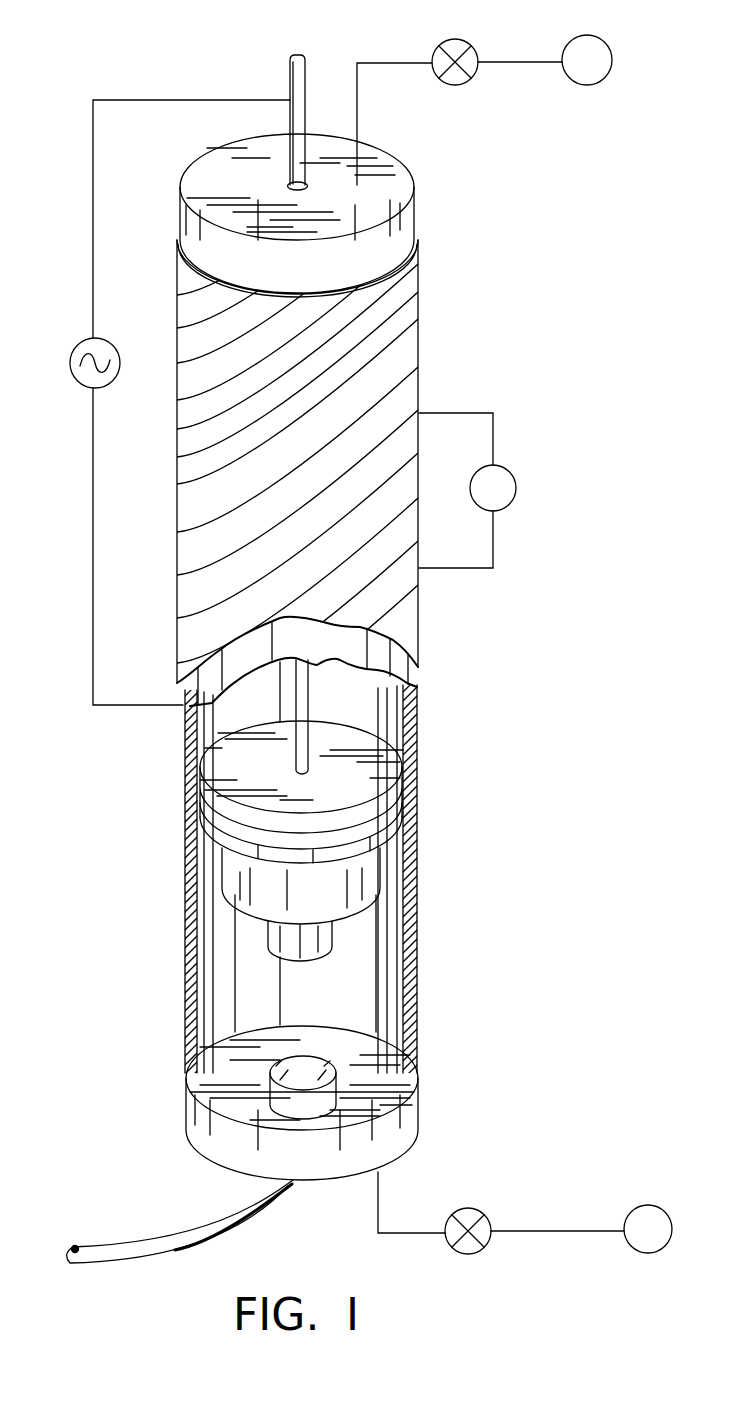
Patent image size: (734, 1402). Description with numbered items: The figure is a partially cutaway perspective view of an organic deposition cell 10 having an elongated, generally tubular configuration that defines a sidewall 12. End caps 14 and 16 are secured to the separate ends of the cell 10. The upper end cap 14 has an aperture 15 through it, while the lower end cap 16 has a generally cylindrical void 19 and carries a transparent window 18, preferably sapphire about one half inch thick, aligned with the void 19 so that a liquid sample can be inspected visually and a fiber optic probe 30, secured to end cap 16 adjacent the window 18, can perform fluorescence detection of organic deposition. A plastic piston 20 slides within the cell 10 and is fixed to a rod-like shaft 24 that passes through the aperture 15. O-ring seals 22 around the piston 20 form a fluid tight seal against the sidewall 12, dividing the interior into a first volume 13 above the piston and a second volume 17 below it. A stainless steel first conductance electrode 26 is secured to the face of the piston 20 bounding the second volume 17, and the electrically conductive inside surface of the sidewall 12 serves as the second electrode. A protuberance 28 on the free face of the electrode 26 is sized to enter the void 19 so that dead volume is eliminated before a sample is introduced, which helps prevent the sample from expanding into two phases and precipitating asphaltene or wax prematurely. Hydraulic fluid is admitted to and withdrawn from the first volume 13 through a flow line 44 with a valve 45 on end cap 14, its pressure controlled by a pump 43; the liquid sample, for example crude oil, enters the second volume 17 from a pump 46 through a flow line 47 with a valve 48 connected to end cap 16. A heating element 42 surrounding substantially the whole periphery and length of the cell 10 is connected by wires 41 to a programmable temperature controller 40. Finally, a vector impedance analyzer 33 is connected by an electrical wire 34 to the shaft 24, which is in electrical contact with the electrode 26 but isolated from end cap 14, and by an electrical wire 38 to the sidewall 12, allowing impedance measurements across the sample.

The cell 10 is at (420, 688).
The sidewall 12 is at (417, 730).
The first volume 13 is at (268, 716).
The end cap 14 is at (414, 214).
The aperture 15 is at (310, 184).
The end cap 16 is at (418, 1112).
The second volume 17 is at (320, 1011).
The transparent window 18 is at (268, 1100).
The void 19 is at (315, 1084).
The piston 20 is at (398, 776).
The O-ring seals 22 is at (386, 845).
The shaft 24 is at (308, 706).
The first conductance electrode 26 is at (383, 873).
The protuberance 28 is at (333, 942).
The fiber optic probe 30 is at (190, 1248).
The vector impedance analyzer 33 is at (72, 354).
The electrical wire 34 is at (93, 155).
The electrical wire 38 is at (93, 544).
The temperature controller 40 is at (516, 497).
The wires 41 is at (482, 413).
The heating element 42 is at (394, 383).
The pump 43 is at (605, 43).
The flow line 44 is at (507, 60).
The valve 45 is at (462, 40).
The pump 46 is at (628, 1208).
The flow line 47 is at (543, 1231).
The valve 48 is at (462, 1209).